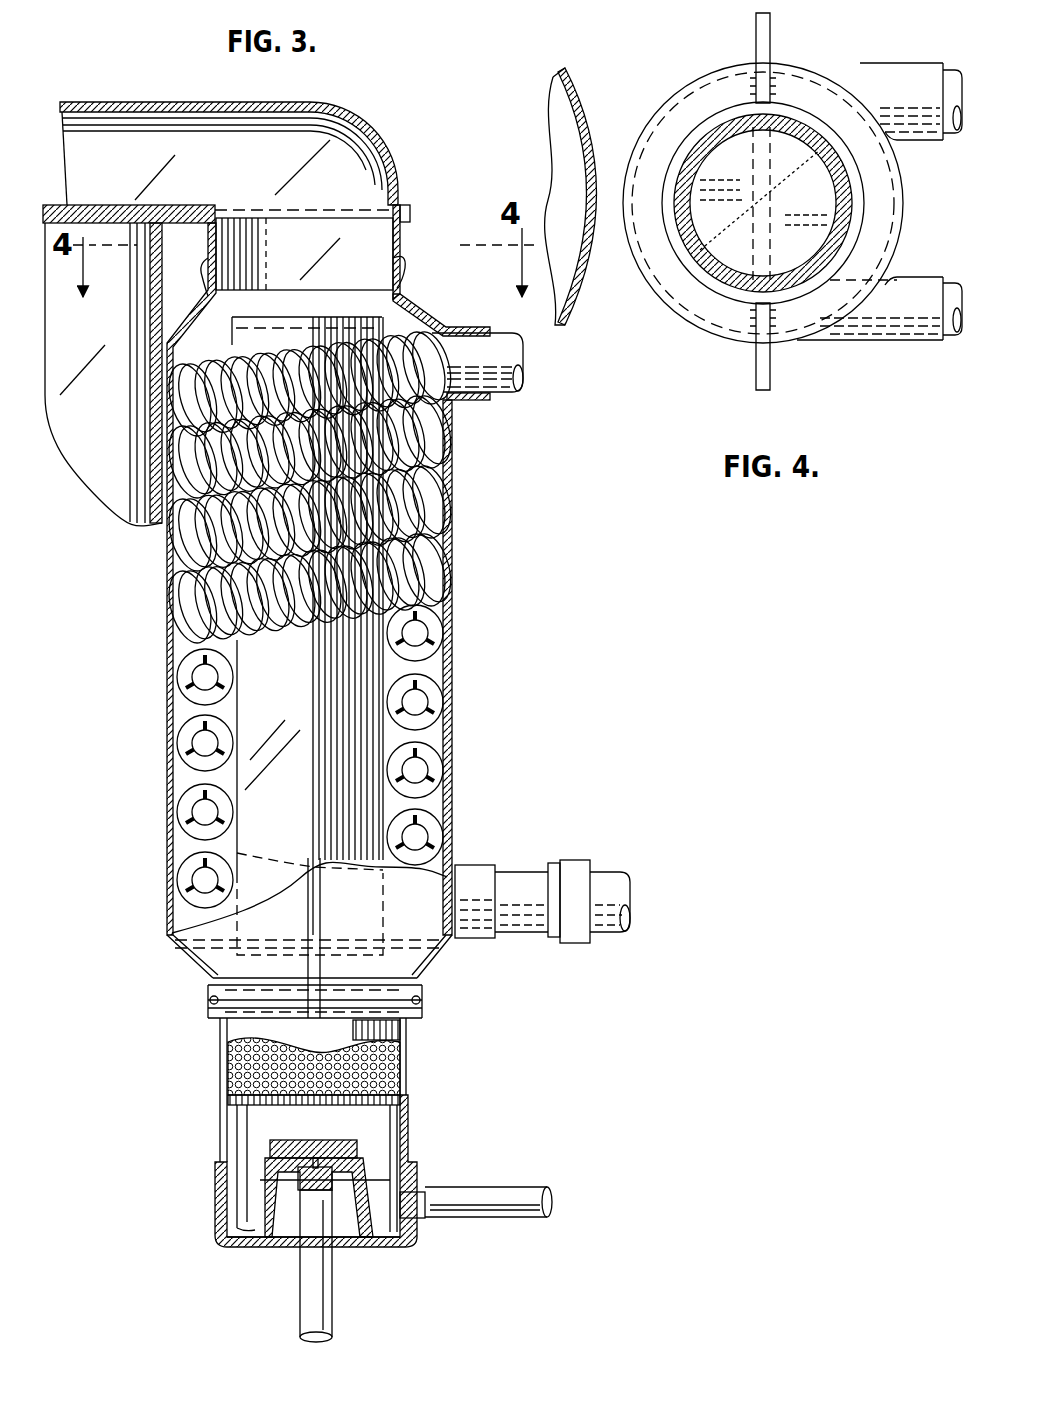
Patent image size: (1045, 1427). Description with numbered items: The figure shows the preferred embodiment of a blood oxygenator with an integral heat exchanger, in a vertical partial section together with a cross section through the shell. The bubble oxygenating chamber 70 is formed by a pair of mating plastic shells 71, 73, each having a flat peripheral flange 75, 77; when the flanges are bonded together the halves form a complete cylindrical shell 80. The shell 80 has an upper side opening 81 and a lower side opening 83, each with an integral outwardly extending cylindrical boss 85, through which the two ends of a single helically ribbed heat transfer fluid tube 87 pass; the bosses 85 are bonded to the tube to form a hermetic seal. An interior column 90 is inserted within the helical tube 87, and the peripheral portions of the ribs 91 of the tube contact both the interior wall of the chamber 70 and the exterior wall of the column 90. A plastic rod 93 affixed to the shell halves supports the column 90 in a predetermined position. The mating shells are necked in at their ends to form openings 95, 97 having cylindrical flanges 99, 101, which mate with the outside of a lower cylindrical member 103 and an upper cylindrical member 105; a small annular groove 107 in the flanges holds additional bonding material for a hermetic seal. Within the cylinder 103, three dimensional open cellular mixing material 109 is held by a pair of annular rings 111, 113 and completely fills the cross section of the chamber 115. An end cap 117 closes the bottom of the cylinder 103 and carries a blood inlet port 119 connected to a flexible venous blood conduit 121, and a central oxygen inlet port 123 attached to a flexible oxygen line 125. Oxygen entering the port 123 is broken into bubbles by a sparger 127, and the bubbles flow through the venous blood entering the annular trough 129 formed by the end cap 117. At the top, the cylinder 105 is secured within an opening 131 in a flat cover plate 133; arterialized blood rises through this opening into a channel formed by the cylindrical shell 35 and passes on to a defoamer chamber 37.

In FIG. 3, the cylindrical shell 35 is at (125, 100).
In FIG. 3, the defoamer chamber 37 is at (122, 505).
In FIG. 4, the defoamer chamber 37 is at (600, 82).
In FIG. 3, the flat cover plate 133 is at (196, 205).
In FIG. 3, the opening 131 is at (393, 228).
In FIG. 3, the cylindrical member 105 is at (401, 232).
In FIG. 3, the opening 95 is at (406, 262).
In FIG. 3, the cylindrical flange 99 is at (415, 282).
In FIG. 3, the upper side opening 81 is at (500, 343).
In FIG. 3, the cylindrical boss 85 is at (485, 400).
In FIG. 4, the cylindrical boss 85 is at (915, 143).
In FIG. 3, the lower side opening 83 is at (505, 872).
In FIG. 3, the cylindrical shell 80 is at (458, 500).
In FIG. 4, the cylindrical shell 80 is at (677, 321).
In FIG. 3, the helically ribbed heat transfer fluid tube 87 is at (442, 562).
In FIG. 4, the helically ribbed heat transfer fluid tube 87 is at (822, 244).
In FIG. 3, the bubble oxygenating chamber 70 is at (452, 595).
In FIG. 3, the ribs 91 is at (170, 636).
In FIG. 3, the interior column 90 is at (289, 812).
In FIG. 4, the interior column 90 is at (813, 195).
In FIG. 3, the plastic rod 93 is at (325, 965).
In FIG. 4, the plastic rod 93 is at (752, 183).
In FIG. 3, the shell half 71 is at (195, 958).
In FIG. 4, the shell half 71 is at (690, 335).
In FIG. 3, the shell half 73 is at (435, 960).
In FIG. 4, the shell half 73 is at (817, 345).
In FIG. 3, the flat peripheral flange 77 is at (418, 982).
In FIG. 4, the flat peripheral flange 77 is at (771, 370).
In FIG. 3, the annular ring 113 is at (215, 978).
In FIG. 3, the annular groove 107 is at (212, 1008).
In FIG. 3, the opening 97 is at (220, 1025).
In FIG. 3, the cylindrical flange 101 is at (418, 1010).
In FIG. 3, the cylindrical member 103 is at (408, 1035).
In FIG. 3, the open cellular mixing material 109 is at (360, 1068).
In FIG. 3, the annular ring 111 is at (222, 1122).
In FIG. 3, the chamber 115 is at (380, 1140).
In FIG. 3, the blood inlet port 119 is at (425, 1200).
In FIG. 3, the flexible venous blood conduit 121 is at (490, 1217).
In FIG. 3, the oxygen inlet port 123 is at (316, 1156).
In FIG. 3, the sparger 127 is at (350, 1140).
In FIG. 3, the flexible oxygen line 125 is at (297, 1275).
In FIG. 3, the annular trough 129 is at (385, 1210).
In FIG. 3, the end cap 117 is at (400, 1245).
In FIG. 4, the flat peripheral flange 75 is at (757, 372).